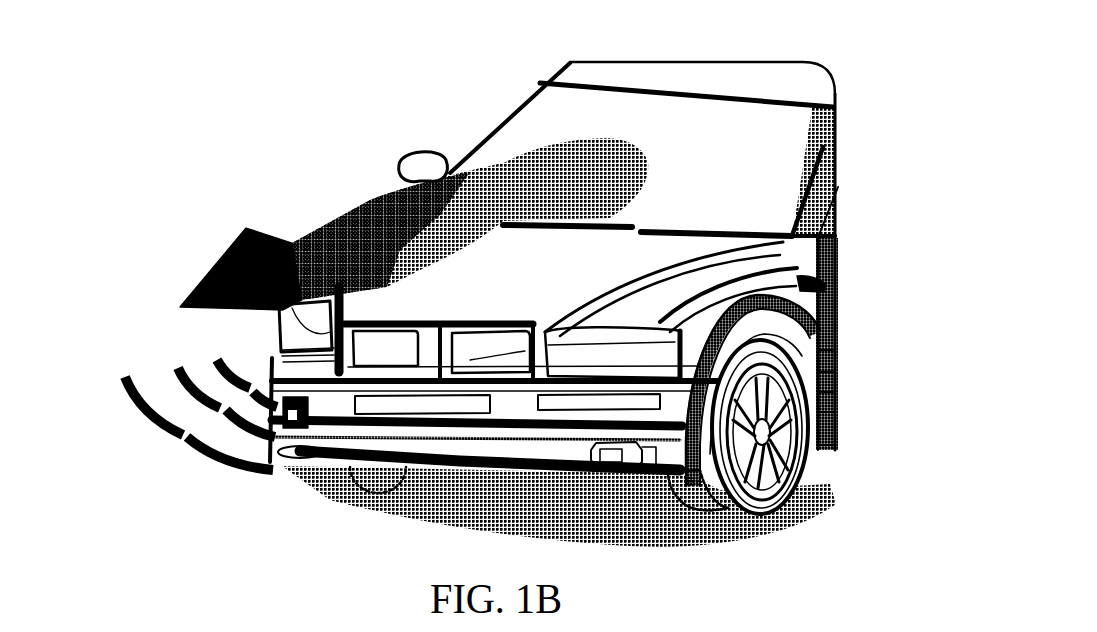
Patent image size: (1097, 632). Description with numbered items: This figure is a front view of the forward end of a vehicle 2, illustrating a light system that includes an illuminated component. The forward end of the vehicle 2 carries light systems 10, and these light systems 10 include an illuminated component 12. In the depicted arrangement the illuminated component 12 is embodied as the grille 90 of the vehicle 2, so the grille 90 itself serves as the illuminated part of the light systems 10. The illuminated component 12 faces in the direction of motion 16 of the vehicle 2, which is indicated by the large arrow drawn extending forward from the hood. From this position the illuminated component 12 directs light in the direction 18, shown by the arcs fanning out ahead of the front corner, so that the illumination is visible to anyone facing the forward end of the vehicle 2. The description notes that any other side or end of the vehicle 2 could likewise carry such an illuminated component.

The vehicle 2 is at (358, 106).
The light systems 10 is at (820, 308).
The illuminated component 12 is at (487, 357).
The direction of motion 16 is at (297, 234).
The direction 18 is at (180, 383).
The grille 90 is at (374, 358).